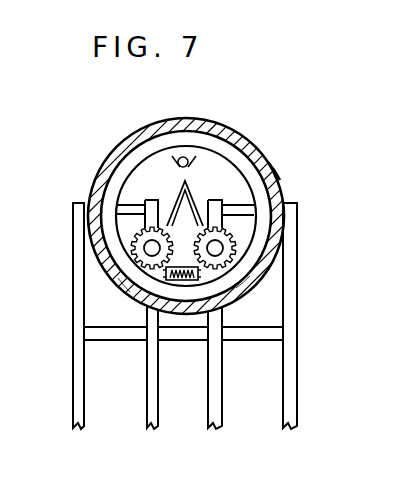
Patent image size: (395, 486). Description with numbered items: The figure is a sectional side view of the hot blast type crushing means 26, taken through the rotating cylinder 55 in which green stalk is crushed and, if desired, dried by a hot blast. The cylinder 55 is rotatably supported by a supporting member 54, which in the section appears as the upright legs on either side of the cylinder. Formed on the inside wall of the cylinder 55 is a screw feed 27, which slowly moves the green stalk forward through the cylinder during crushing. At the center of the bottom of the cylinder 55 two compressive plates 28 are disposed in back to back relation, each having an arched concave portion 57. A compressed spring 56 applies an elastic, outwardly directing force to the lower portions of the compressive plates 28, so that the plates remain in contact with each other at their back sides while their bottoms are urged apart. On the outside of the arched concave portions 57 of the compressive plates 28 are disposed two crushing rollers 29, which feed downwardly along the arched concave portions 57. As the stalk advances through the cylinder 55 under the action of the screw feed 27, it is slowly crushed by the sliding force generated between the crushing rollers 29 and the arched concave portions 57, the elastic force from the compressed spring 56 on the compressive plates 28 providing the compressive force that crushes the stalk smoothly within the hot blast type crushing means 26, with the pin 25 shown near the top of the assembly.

The pin 25 is at (178, 156).
The hot blast type crushing means 26 is at (265, 103).
The screw feed 27 is at (127, 160).
The compressive plates 28 is at (180, 190).
The crushing rollers 29 is at (123, 280).
The supporting member 54 is at (73, 291).
The cylinder 55 is at (268, 162).
The compressed spring 56 is at (178, 282).
The arched portion 57 is at (165, 222).